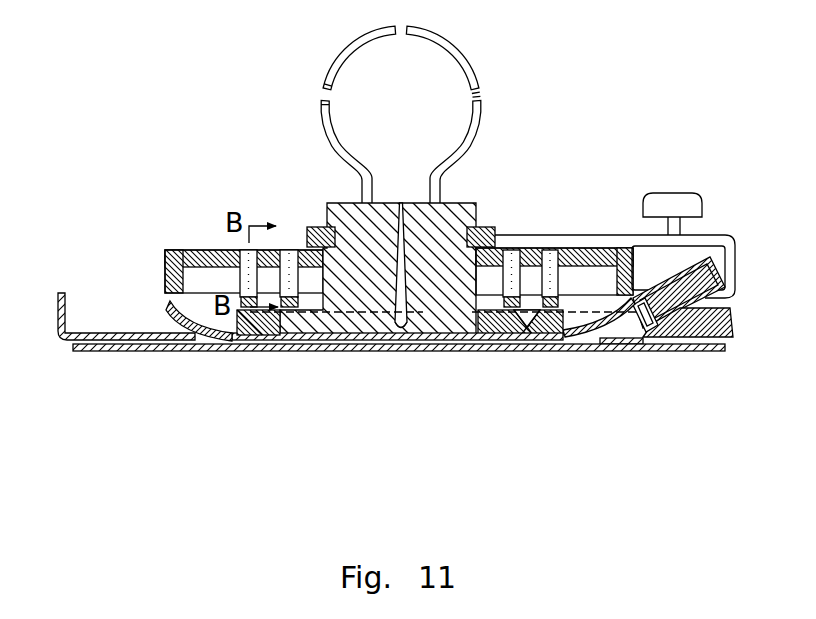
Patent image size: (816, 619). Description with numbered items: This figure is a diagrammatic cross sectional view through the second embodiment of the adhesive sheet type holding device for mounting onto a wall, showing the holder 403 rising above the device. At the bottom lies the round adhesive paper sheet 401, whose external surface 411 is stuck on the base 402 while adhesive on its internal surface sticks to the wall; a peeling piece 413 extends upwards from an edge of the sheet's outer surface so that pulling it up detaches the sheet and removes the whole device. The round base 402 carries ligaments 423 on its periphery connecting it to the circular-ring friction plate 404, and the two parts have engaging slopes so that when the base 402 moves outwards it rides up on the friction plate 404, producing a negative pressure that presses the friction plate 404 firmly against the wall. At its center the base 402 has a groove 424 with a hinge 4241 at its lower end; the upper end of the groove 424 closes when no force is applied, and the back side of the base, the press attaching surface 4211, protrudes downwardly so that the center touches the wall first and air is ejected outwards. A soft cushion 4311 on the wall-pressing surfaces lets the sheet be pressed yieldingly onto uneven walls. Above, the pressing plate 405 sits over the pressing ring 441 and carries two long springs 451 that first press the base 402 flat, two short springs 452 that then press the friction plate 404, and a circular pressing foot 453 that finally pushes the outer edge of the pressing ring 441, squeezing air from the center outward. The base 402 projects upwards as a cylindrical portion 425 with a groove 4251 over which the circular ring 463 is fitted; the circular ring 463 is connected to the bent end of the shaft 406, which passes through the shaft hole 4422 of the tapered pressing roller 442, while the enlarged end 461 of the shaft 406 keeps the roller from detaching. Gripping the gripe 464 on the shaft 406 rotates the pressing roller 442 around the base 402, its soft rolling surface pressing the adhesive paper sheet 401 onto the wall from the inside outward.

The adhesive paper sheet 401 is at (73, 348).
The base 402 is at (424, 312).
The holder 403 is at (477, 83).
The friction plate 404 is at (542, 342).
The pressing plate 405 is at (610, 256).
The shaft 406 is at (733, 252).
The external surface 411 is at (612, 344).
The peeling piece 413 is at (63, 322).
The ligament 423 is at (518, 330).
The groove 424 is at (408, 274).
The cylindrical portion 425 is at (365, 253).
The pressing ring 441 is at (598, 312).
The pressing roller 442 is at (700, 268).
The long spring 451 is at (512, 283).
The short spring 452 is at (550, 282).
The pressing foot 453 is at (623, 262).
The end of shaft 461 is at (635, 328).
The circular ring 463 is at (493, 226).
The gripe 464 is at (670, 200).
The press attaching surface 4211 is at (432, 340).
The hinge 4241 is at (402, 338).
The groove 4251 is at (308, 226).
The soft cushion 4311 is at (230, 350).
The shaft hole 4422 is at (690, 340).